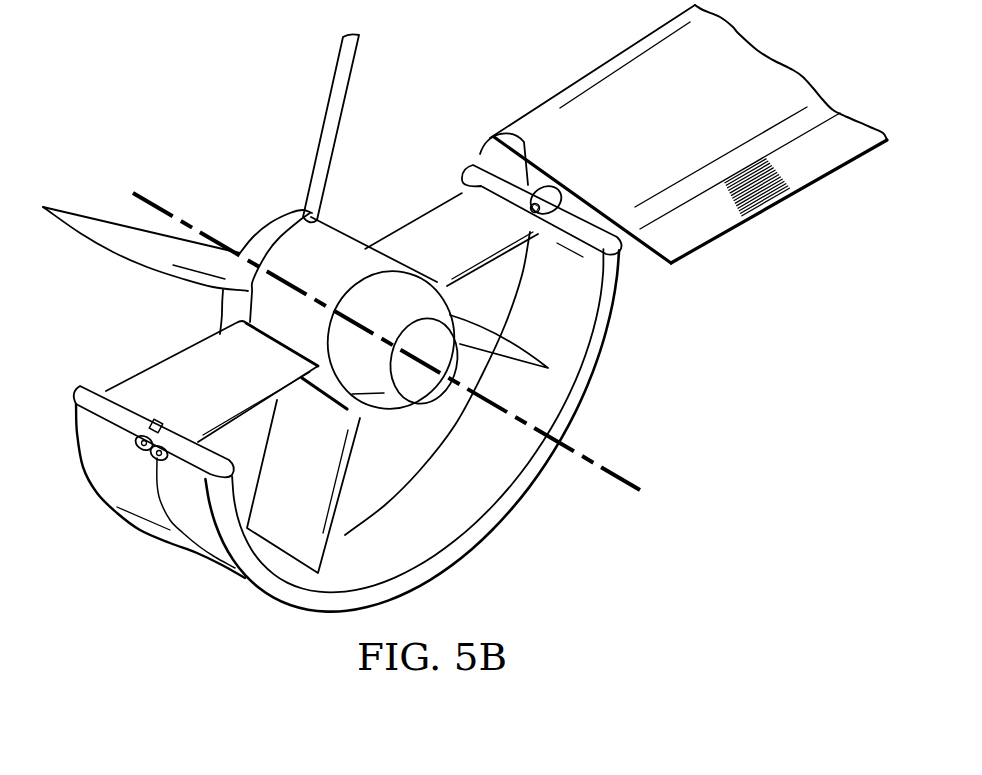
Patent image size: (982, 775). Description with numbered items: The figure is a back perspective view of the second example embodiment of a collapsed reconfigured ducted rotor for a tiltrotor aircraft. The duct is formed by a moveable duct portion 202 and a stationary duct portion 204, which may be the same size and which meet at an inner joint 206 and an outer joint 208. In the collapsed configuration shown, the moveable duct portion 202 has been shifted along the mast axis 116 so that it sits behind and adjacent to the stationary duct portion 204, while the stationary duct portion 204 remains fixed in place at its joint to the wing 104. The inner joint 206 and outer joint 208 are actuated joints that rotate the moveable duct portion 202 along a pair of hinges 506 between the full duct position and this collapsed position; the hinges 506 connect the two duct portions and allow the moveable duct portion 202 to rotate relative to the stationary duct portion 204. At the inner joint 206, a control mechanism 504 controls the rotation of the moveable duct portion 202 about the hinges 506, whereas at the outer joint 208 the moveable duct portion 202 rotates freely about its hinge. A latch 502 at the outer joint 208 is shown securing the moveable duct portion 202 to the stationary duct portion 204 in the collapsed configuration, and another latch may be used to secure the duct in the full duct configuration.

The wing 104 is at (590, 72).
The mast axis 116 is at (620, 473).
The moveable duct portion 202 is at (240, 587).
The stationary duct portion 204 is at (153, 537).
The inner joint 206 is at (528, 148).
The outer joint 208 is at (130, 413).
The latch 502 is at (140, 452).
The control mechanism 504 is at (548, 188).
The hinges 506 is at (163, 423).